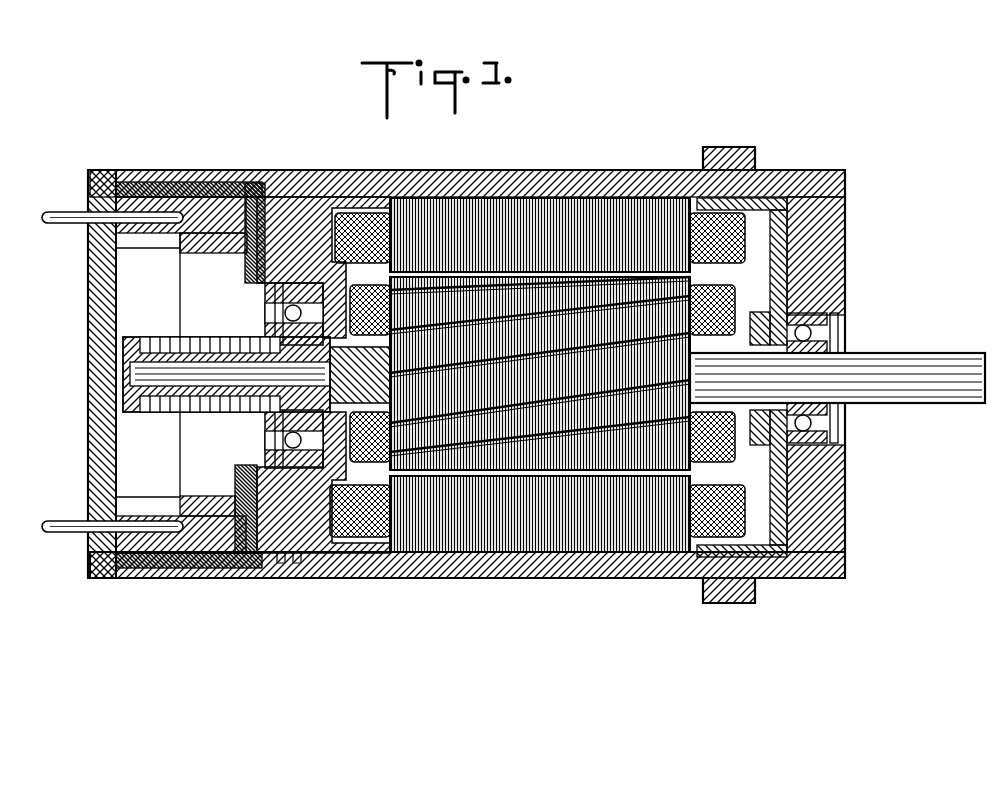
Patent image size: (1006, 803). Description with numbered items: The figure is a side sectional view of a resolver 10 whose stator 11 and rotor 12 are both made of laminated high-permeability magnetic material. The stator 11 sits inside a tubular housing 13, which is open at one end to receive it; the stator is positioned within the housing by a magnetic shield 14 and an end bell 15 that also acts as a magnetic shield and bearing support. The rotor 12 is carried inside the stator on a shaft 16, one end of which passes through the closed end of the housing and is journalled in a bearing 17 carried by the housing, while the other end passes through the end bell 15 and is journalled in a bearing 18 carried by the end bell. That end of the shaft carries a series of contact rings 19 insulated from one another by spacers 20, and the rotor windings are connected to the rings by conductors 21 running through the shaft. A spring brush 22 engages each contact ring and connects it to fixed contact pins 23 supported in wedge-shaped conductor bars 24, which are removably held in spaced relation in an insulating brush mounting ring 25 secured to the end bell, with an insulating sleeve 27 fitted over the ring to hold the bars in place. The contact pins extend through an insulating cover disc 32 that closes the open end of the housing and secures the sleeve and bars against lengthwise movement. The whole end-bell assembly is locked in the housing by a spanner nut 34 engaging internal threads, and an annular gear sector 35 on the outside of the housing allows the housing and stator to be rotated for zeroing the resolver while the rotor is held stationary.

The resolver 10 is at (656, 170).
The stator 11 is at (430, 560).
The rotor 12 is at (605, 455).
The housing 13 is at (505, 575).
The magnetic shield 14 is at (775, 578).
The end bell 15 is at (318, 578).
The shaft 16 is at (905, 355).
The bearing 17 is at (845, 420).
The bearing 18 is at (265, 300).
The contact rings 19 is at (152, 337).
The spacers 20 is at (208, 337).
The conductors 21 is at (265, 422).
The spring brush 22 is at (240, 478).
The contact pins 23 is at (58, 224).
The conductor bars 24 is at (204, 210).
The brush mounting ring 25 is at (140, 248).
The sleeve 27 is at (146, 182).
The cover disc 32 is at (93, 372).
The spanner nut 34 is at (268, 578).
The gear sector 35 is at (757, 150).